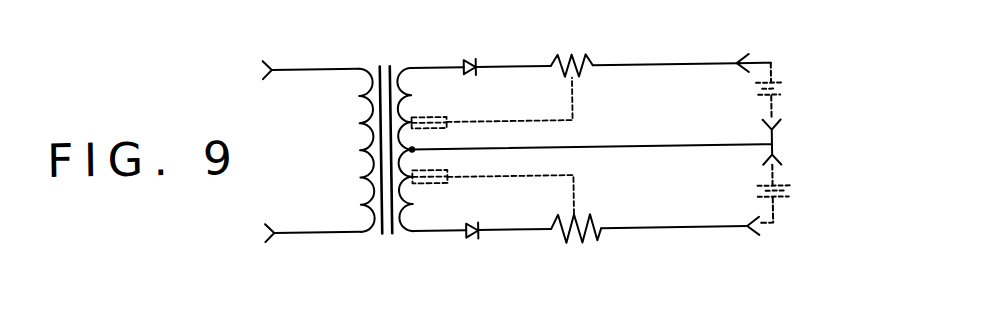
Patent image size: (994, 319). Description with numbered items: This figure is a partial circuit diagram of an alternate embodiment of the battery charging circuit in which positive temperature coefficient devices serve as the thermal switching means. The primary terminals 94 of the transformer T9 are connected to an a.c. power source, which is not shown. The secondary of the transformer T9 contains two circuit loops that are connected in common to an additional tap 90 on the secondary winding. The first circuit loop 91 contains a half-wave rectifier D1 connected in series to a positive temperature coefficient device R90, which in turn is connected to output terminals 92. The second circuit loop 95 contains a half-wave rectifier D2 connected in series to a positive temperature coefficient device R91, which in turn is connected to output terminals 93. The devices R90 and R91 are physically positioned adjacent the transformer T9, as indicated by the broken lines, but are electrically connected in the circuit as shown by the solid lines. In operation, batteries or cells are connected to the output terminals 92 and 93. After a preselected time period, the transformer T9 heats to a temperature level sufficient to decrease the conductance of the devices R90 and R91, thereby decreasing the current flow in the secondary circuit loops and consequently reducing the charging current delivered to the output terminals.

The transformer T9 is at (380, 69).
The primary terminals 94 is at (264, 68).
The first circuit loop 91 is at (434, 82).
The second circuit loop 95 is at (427, 218).
The additional tap 90 is at (414, 151).
The half-wave rectifier D1 is at (478, 76).
The half-wave rectifier D2 is at (474, 241).
The positive temperature coefficient device R90 is at (553, 67).
The positive temperature coefficient device R91 is at (597, 238).
The output terminals 92 is at (753, 62).
The output terminals 93 is at (783, 166).